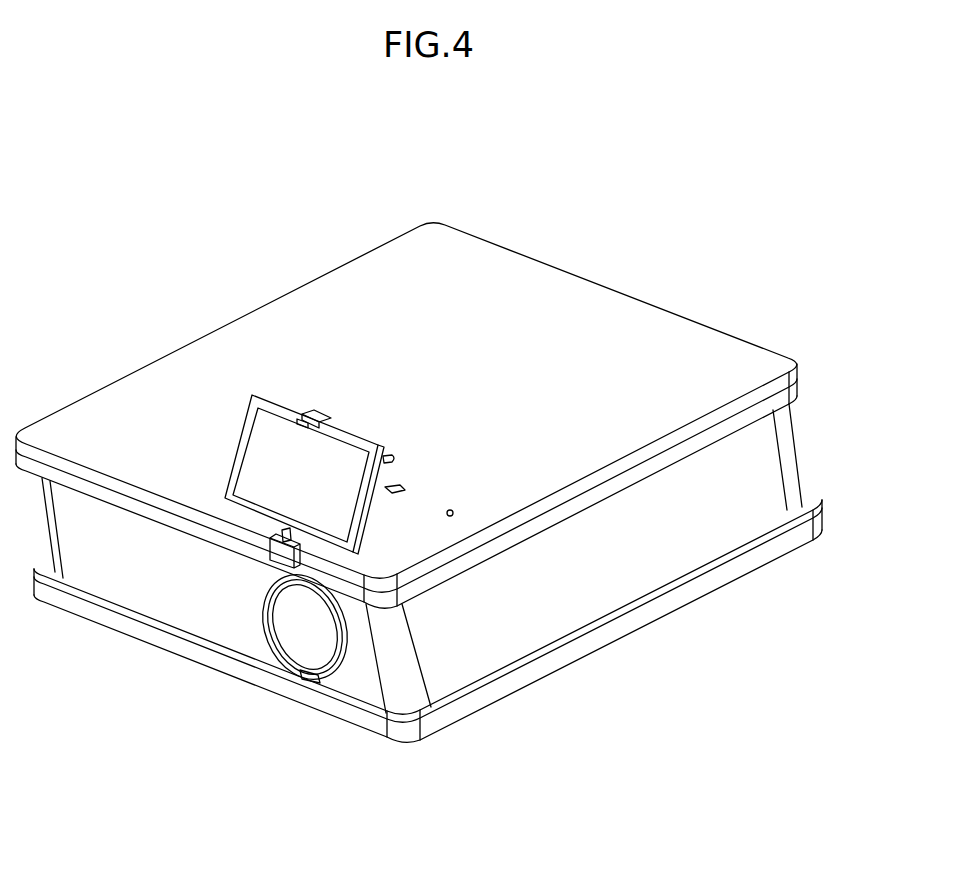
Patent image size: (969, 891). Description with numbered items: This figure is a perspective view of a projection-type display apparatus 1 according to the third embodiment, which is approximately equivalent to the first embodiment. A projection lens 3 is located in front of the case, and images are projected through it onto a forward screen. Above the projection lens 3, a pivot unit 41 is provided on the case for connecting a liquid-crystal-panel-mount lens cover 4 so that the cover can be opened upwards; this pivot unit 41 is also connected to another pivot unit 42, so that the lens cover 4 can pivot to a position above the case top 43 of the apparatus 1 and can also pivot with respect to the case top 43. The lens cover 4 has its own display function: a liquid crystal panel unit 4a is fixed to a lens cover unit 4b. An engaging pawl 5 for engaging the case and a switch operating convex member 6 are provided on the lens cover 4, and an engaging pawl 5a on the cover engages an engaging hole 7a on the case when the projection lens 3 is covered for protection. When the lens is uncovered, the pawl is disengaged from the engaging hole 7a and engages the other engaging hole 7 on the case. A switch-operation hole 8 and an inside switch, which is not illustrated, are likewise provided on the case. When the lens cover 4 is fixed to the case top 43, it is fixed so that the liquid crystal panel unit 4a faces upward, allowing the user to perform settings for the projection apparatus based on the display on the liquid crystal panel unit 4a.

The projection-type display apparatus 1 is at (562, 257).
The case top 43 is at (273, 330).
The lens cover 4 is at (252, 474).
The liquid crystal panel unit 4a is at (270, 457).
The lens cover unit 4b is at (238, 433).
The engaging pawl 5 is at (325, 417).
The engaging pawl 5a is at (308, 414).
The switch operating convex member 6 is at (388, 453).
The engaging hole 7 is at (390, 492).
The switch-operation hole 8 is at (455, 508).
The pivot unit 41 is at (277, 548).
The pivot unit 42 is at (282, 528).
The projection lens 3 is at (303, 628).
The engaging hole 7a is at (312, 678).